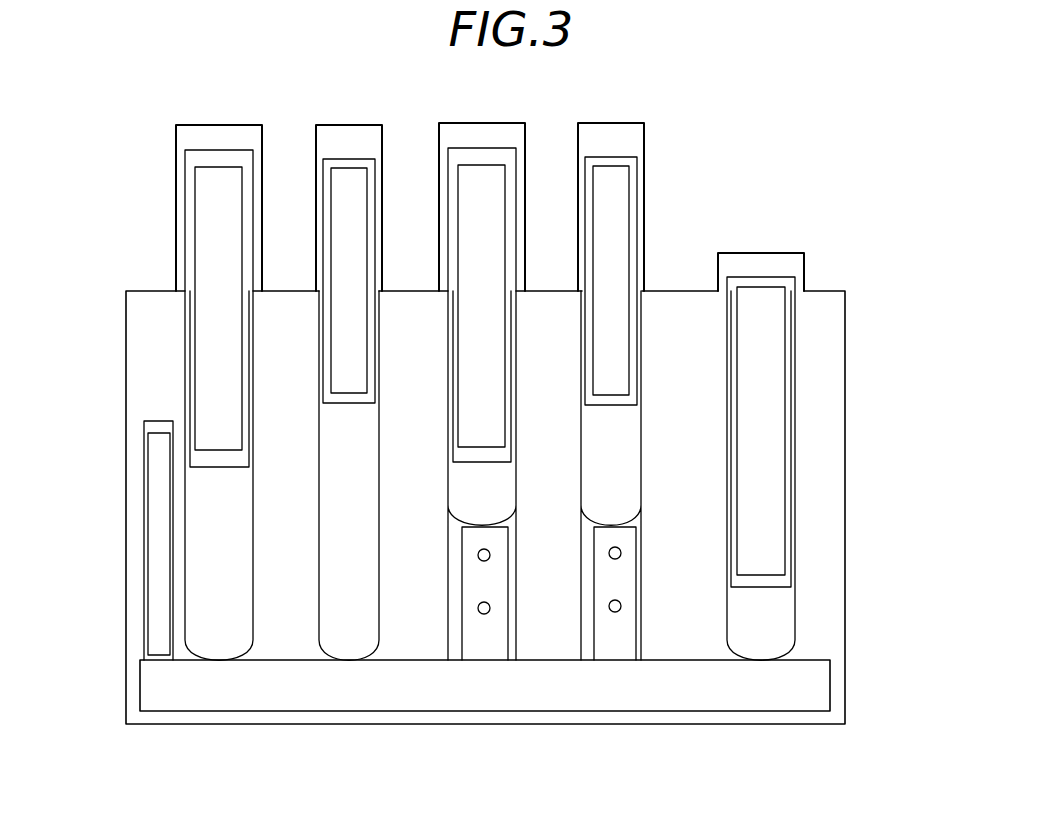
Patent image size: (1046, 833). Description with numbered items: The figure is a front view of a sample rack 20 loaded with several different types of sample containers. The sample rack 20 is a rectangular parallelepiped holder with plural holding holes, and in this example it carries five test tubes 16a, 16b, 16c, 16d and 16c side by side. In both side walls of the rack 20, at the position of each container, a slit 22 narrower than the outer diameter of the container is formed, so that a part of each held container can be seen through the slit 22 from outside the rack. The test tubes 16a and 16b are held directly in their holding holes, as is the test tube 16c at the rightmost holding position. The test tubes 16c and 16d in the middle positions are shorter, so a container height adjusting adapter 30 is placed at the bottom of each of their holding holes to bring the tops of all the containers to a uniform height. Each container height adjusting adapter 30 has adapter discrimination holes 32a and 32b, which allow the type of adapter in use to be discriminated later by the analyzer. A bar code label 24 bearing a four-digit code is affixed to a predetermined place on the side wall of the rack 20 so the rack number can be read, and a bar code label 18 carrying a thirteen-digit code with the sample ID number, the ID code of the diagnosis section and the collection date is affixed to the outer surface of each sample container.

The test tube 16a is at (237, 124).
The test tube 16b is at (357, 124).
The test tube 16c is at (477, 122).
The test tube 16d is at (602, 122).
The bar code label 18 is at (226, 233).
The sample rack 20 is at (108, 342).
The slit 22 is at (254, 497).
The bar code label 24 is at (155, 560).
The container height adjusting adapter 30 is at (490, 647).
The adapter discrimination hole 32a is at (490, 556).
The adapter discrimination hole 32b is at (490, 609).